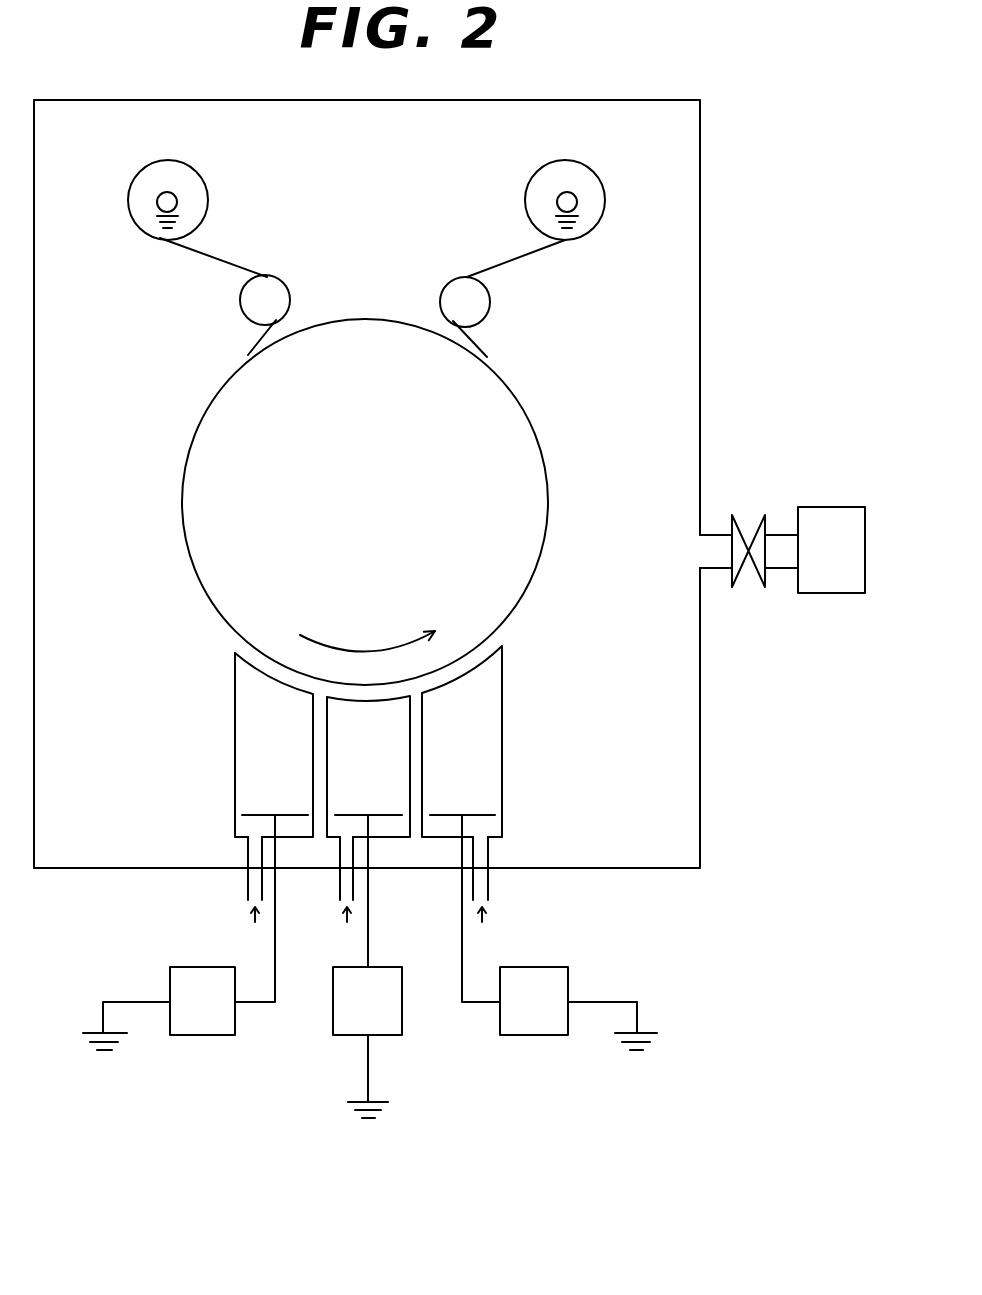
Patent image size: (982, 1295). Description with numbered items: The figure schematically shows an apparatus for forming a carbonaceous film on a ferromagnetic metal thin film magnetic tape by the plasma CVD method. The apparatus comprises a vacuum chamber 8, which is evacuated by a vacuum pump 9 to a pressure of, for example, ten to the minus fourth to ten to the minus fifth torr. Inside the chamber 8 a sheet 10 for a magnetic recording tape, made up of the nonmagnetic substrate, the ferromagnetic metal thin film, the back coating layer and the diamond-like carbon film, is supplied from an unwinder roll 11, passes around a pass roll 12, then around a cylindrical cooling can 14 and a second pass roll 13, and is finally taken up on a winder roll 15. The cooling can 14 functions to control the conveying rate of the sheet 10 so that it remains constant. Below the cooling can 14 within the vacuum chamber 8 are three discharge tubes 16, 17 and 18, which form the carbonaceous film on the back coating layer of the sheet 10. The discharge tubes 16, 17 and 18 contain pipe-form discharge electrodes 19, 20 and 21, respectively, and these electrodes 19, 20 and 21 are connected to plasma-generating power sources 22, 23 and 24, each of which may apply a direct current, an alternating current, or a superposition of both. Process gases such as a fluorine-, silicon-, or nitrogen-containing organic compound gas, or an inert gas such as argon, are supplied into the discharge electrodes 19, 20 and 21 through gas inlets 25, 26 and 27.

The vacuum chamber 8 is at (700, 768).
The vacuum pump 9 is at (782, 550).
The sheet 10 is at (247, 265).
The unwinder roll 11 is at (172, 199).
The pass roll 12 is at (267, 300).
The pass roll 13 is at (467, 298).
The cylindrical cooling can 14 is at (365, 502).
The winder roll 15 is at (562, 200).
The discharge tube 16 is at (235, 736).
The discharge tube 17 is at (368, 766).
The discharge tube 18 is at (503, 737).
The pipe-form discharge electrode 19 is at (258, 813).
The pipe-form discharge electrode 20 is at (347, 815).
The pipe-form discharge electrode 21 is at (477, 813).
The plasma-generating power source 22 is at (179, 932).
The plasma-generating power source 23 is at (367, 966).
The plasma-generating power source 24 is at (559, 932).
The gas inlet 25 is at (251, 898).
The gas inlet 26 is at (345, 898).
The gas inlet 27 is at (490, 898).